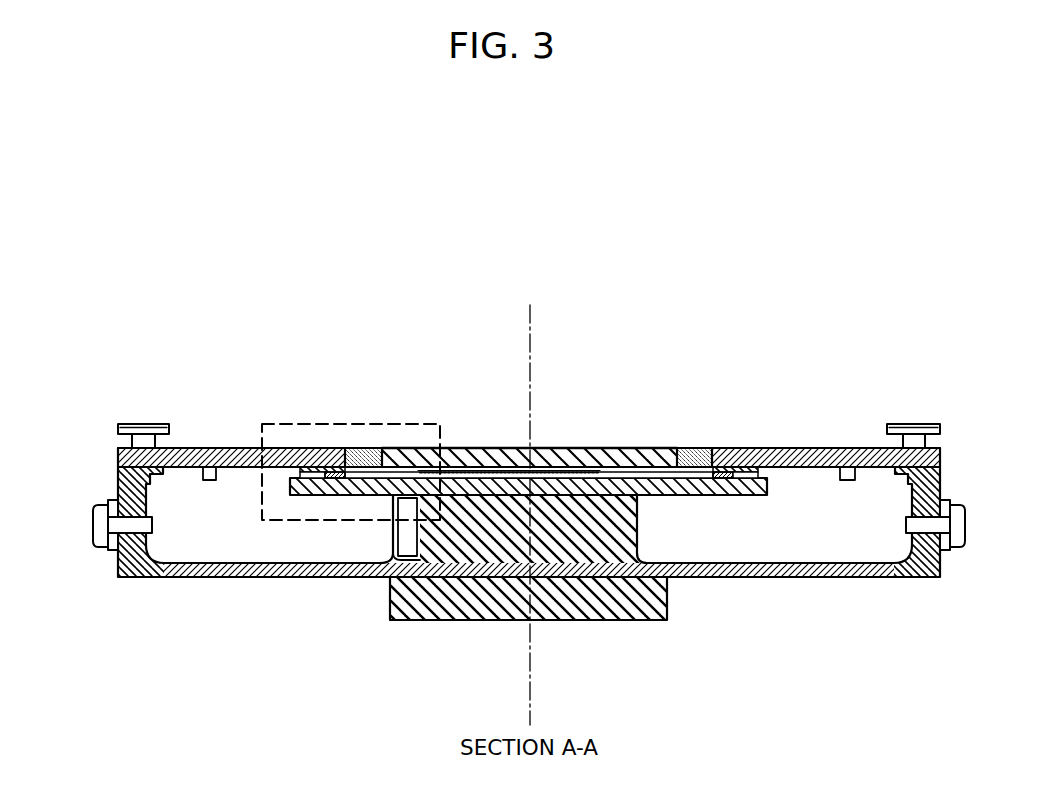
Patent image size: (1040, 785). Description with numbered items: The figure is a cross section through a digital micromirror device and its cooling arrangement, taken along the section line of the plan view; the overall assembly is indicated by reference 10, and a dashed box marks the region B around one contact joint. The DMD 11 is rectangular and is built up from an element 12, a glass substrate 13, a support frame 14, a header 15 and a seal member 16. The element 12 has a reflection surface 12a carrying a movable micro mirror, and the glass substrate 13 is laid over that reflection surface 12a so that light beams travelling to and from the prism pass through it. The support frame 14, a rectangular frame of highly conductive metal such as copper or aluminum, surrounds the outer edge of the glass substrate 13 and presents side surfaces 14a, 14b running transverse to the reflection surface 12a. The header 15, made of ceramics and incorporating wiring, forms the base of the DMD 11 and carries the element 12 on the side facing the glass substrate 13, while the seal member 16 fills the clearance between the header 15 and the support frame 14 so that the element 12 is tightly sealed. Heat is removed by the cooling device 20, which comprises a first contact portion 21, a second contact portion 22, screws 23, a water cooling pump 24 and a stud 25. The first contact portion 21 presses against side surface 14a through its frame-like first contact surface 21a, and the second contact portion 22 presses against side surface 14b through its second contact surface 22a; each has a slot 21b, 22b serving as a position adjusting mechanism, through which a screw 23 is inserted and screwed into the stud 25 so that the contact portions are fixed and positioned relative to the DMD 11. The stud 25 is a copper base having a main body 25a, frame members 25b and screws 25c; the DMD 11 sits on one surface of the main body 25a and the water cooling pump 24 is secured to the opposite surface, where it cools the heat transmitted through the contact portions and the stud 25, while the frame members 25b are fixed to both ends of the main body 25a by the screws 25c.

The image pickup apparatus 10 is at (767, 318).
The DMD 11 is at (457, 430).
The element 12 is at (593, 448).
The reflection surface 12a is at (553, 448).
The glass substrate 13 is at (490, 448).
The support frame 14 is at (375, 448).
The side surface 14a is at (306, 448).
The side surface 14b is at (728, 448).
The header 15 is at (750, 495).
The seal member 16 is at (338, 480).
The cooling device 20 is at (474, 635).
The first contact portion 21 is at (230, 425).
The first contact surface 21a is at (355, 448).
The slot 21b is at (130, 443).
The second contact portion 22 is at (828, 428).
The second contact surface 22a is at (700, 448).
The slot 22b is at (925, 442).
The screw 23 is at (143, 424).
The water cooling pump 24 is at (620, 612).
The stud 25 is at (690, 595).
The main body 25a is at (637, 525).
The frame member 25b is at (120, 480).
The screw 25c is at (100, 522).
The region B is at (275, 417).